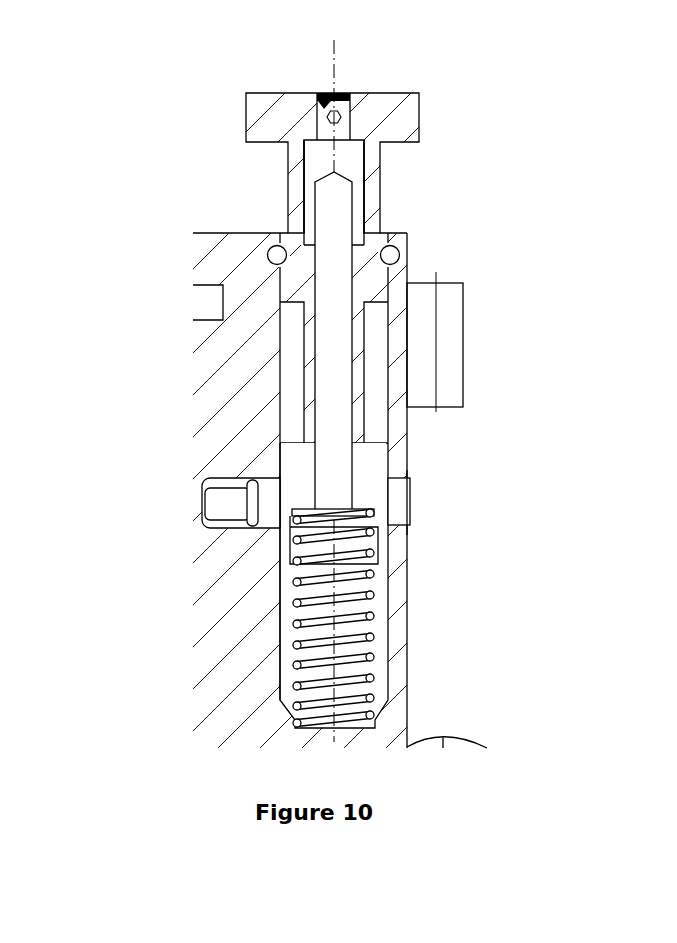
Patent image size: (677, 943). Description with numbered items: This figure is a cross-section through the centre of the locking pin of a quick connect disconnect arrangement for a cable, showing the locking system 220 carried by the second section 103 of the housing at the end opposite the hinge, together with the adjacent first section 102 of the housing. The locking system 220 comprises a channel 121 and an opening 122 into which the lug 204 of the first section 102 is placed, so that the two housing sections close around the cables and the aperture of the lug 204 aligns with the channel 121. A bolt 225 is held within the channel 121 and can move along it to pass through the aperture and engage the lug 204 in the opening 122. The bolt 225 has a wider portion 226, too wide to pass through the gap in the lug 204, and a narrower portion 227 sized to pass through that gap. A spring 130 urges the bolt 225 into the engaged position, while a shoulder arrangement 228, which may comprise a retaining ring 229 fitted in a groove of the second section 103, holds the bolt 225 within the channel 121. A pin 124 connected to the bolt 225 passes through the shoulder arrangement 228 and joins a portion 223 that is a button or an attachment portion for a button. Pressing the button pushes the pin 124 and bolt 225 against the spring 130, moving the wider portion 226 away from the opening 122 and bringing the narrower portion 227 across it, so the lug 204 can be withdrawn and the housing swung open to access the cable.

The first section 102 is at (442, 310).
The second section 103 is at (226, 263).
The channel 121 is at (281, 677).
The opening 122 is at (432, 472).
The pin 124 is at (322, 97).
The spring 130 is at (376, 674).
The lug 204 is at (397, 492).
The locking system 220 is at (562, 726).
The portion 223 is at (399, 117).
The bolt 225 is at (383, 537).
The wider portion 226 is at (303, 463).
The narrower portion 227 is at (305, 390).
The shoulder arrangement 228 is at (361, 272).
The retaining ring 229 is at (395, 255).